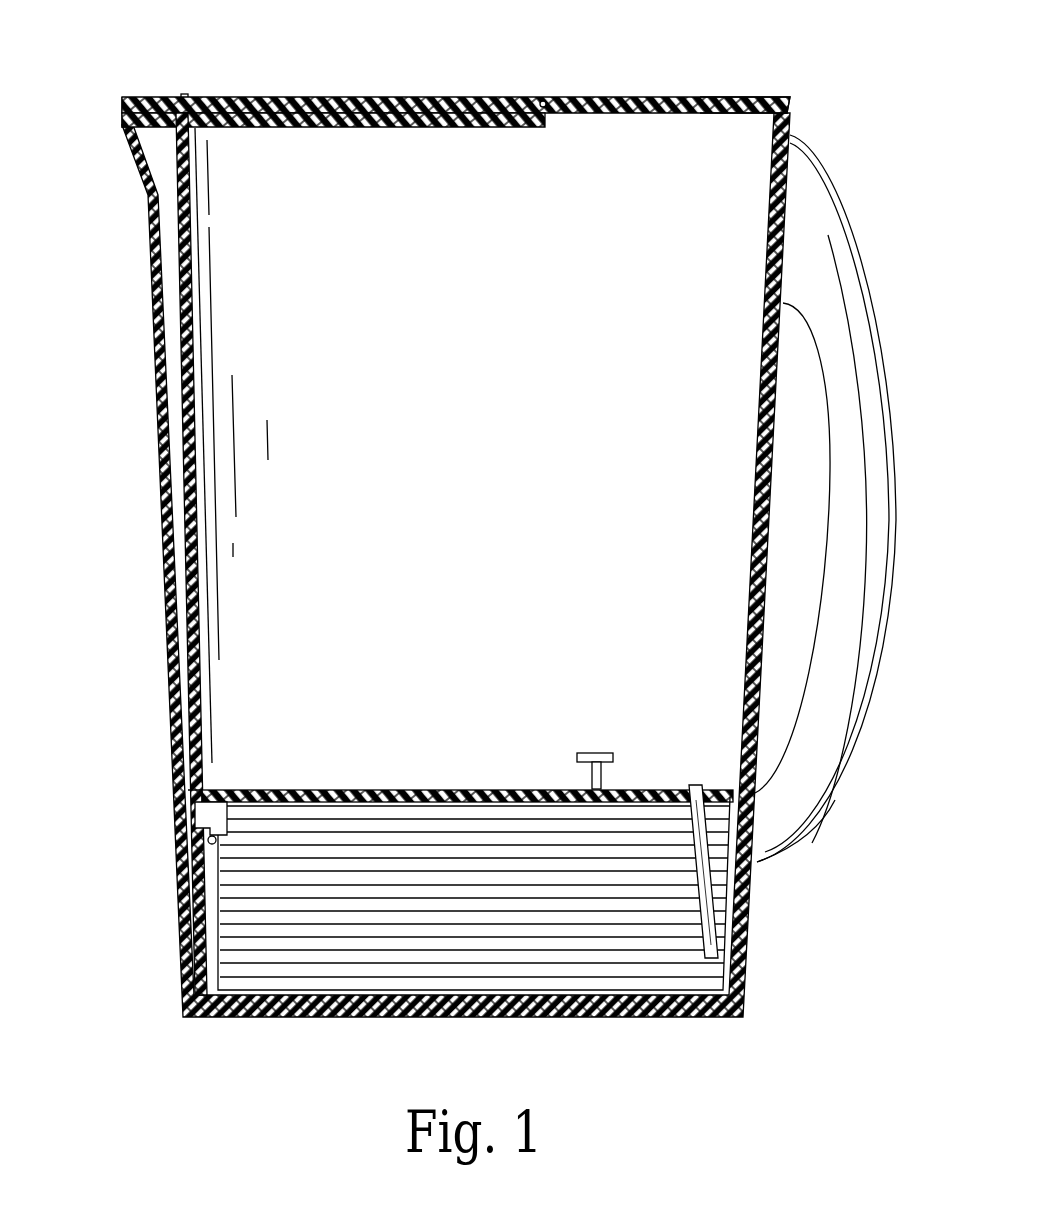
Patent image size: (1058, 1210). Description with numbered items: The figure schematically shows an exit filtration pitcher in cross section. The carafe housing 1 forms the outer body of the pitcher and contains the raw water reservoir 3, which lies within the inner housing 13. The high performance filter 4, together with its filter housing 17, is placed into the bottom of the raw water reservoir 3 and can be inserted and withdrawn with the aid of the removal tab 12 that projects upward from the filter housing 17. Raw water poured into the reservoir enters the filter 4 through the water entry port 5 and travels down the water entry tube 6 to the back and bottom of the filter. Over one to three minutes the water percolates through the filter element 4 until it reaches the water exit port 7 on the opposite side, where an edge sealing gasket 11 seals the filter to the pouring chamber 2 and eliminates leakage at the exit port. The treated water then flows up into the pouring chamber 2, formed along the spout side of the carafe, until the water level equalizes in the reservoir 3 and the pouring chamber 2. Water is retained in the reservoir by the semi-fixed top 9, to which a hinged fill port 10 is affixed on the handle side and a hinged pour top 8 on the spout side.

The carafe housing 1 is at (790, 186).
The pouring chamber 2 is at (180, 440).
The raw water reservoir 3 is at (730, 265).
The high performance filter 4 is at (632, 885).
The water entry port 5 is at (745, 798).
The water entry tube 6 is at (705, 872).
The water exit port 7 is at (210, 818).
The hinged pour top 8 is at (160, 106).
The semi-fixed top 9 is at (383, 122).
The hinged fill port 10 is at (726, 100).
The edge sealing gasket 11 is at (192, 800).
The removal tab 12 is at (612, 752).
The inner housing 13 is at (785, 398).
The filter housing 17 is at (378, 790).